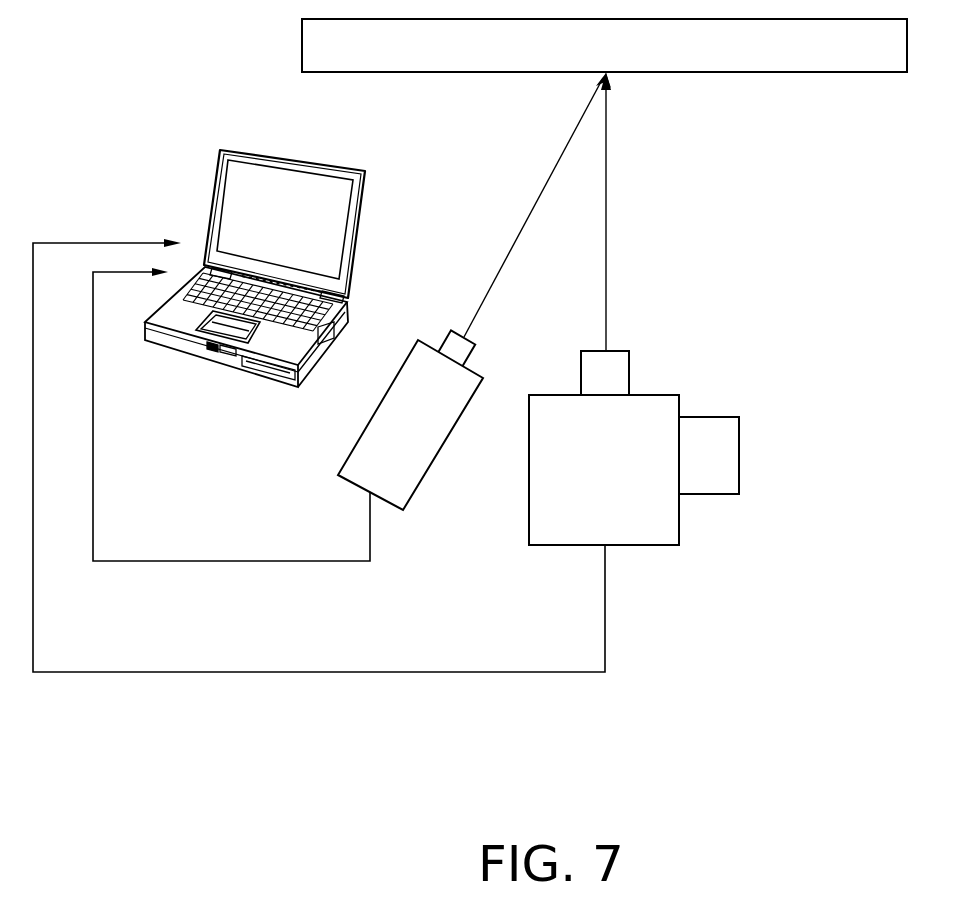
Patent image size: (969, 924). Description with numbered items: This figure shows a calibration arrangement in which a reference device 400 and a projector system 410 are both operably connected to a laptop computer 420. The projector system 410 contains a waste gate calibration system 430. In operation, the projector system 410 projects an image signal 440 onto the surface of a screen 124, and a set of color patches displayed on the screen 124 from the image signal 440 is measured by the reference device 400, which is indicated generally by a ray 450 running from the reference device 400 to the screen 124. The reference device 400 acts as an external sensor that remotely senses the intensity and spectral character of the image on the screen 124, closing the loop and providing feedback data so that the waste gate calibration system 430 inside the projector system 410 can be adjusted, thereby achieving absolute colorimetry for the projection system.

The screen 124 is at (807, 75).
The reference device 400 is at (341, 471).
The projector system 410 is at (648, 547).
The laptop computer 420 is at (213, 185).
The waste gate calibration system 430 is at (740, 438).
The image signal 440 is at (607, 240).
The ray 450 is at (549, 177).